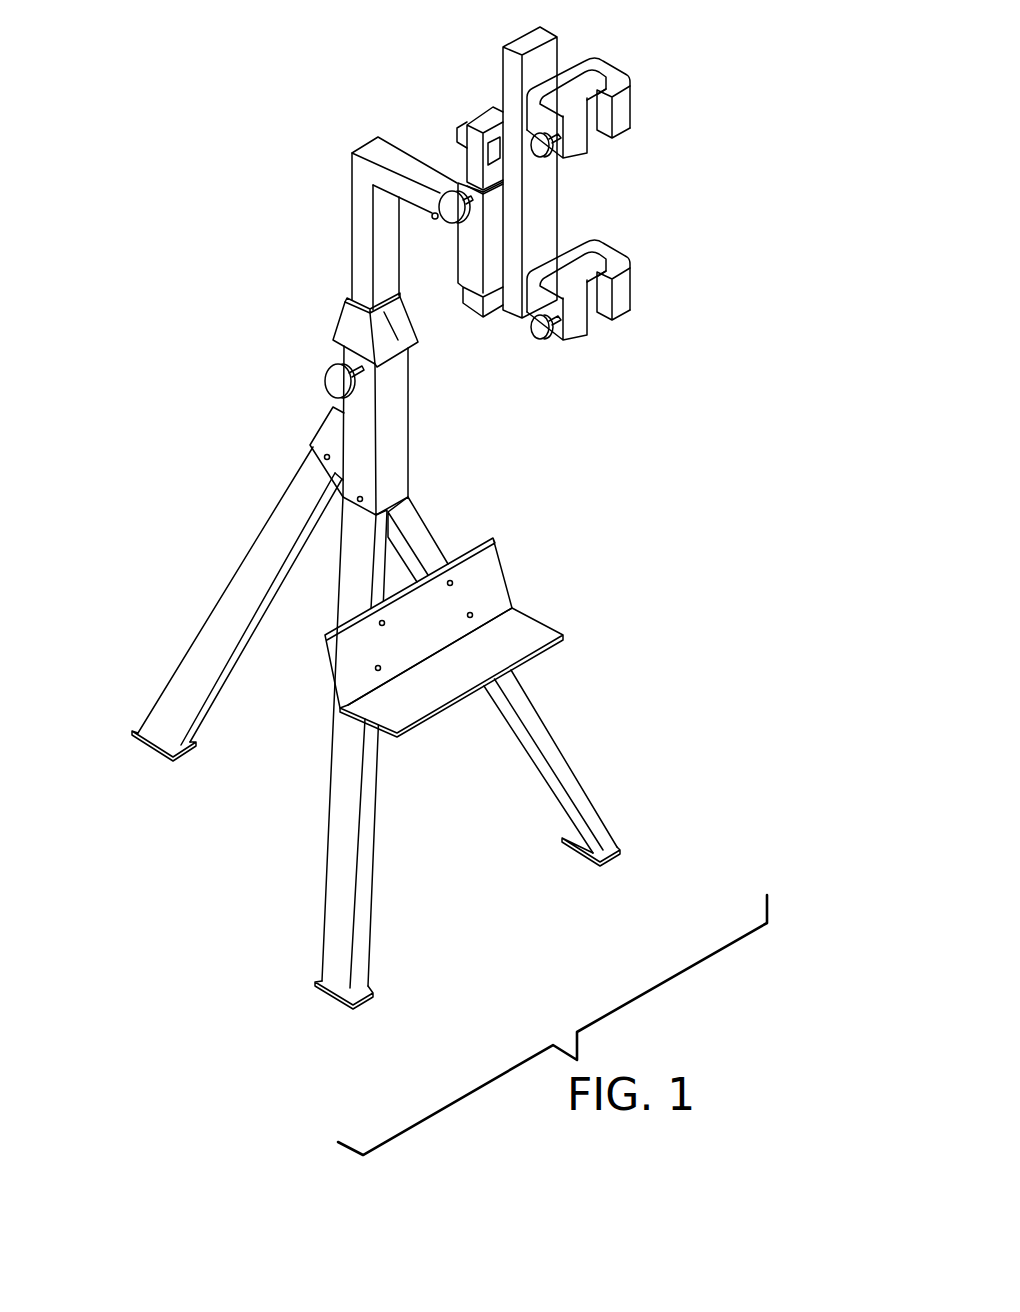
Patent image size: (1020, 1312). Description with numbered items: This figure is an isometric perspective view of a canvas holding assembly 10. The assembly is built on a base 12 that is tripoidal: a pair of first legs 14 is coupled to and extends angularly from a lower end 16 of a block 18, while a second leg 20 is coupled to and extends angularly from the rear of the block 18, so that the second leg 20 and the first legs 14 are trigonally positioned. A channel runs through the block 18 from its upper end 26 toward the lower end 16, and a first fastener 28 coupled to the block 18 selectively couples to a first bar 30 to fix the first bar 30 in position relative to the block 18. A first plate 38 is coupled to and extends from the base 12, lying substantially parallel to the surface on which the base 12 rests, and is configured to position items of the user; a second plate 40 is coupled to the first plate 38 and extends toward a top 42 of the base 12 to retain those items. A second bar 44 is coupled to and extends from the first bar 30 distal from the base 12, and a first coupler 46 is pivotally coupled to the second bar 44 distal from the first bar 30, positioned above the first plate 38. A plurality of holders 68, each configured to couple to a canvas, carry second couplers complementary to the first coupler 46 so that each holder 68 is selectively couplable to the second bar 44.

The canvas holding assembly 10 is at (170, 173).
The base 12 is at (580, 755).
The first legs 14 is at (518, 753).
The lower end 16 is at (392, 500).
The block 18 is at (393, 430).
The second leg 20 is at (230, 582).
The upper end 26 is at (345, 322).
The first fastener 28 is at (326, 381).
The first bar 30 is at (352, 233).
The first plate 38 is at (523, 627).
The second plate 40 is at (487, 577).
The top 42 is at (397, 342).
The second bar 44 is at (383, 150).
The first coupler 46 is at (479, 214).
The holders 68 is at (537, 197).